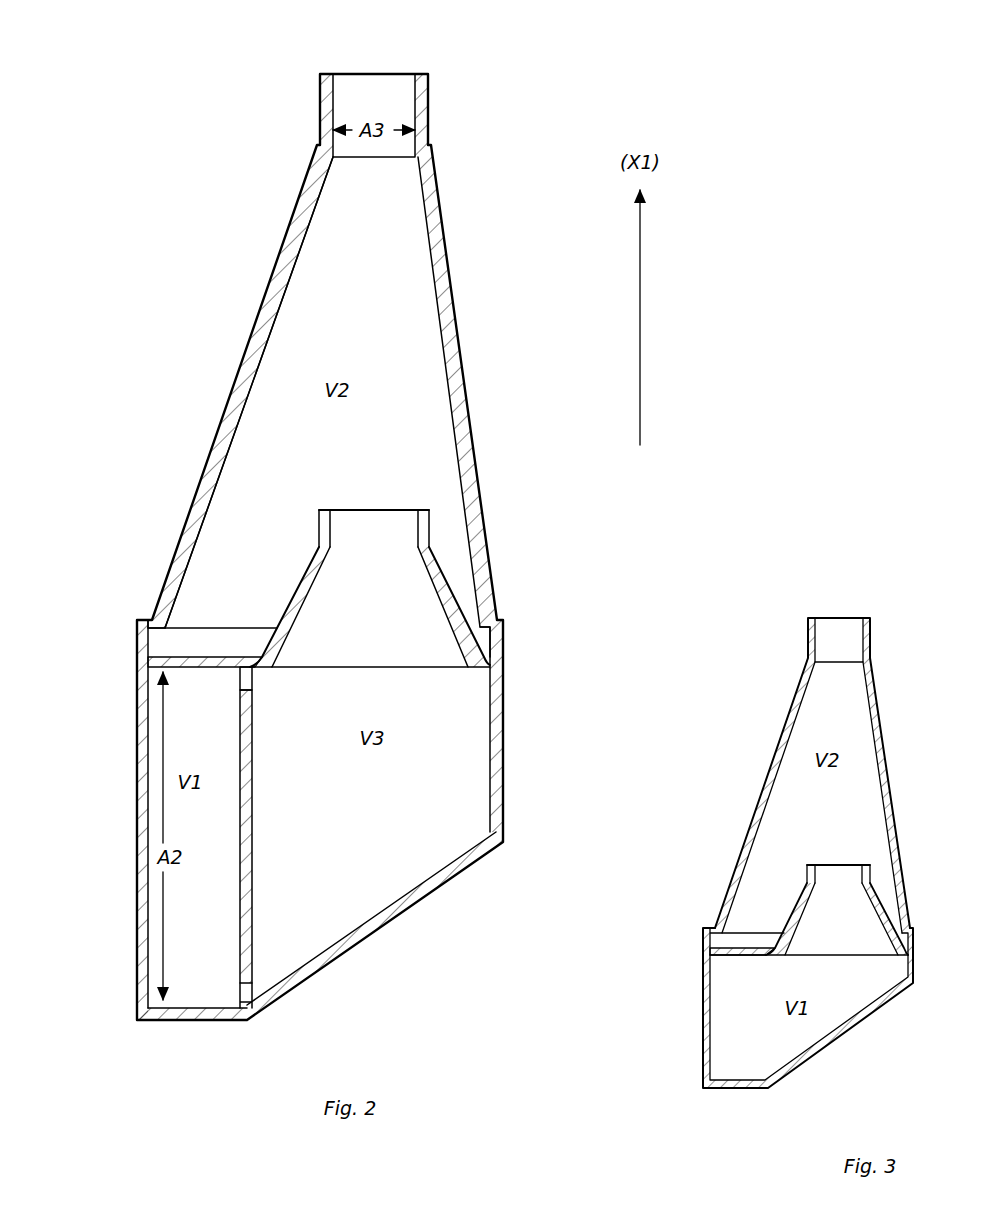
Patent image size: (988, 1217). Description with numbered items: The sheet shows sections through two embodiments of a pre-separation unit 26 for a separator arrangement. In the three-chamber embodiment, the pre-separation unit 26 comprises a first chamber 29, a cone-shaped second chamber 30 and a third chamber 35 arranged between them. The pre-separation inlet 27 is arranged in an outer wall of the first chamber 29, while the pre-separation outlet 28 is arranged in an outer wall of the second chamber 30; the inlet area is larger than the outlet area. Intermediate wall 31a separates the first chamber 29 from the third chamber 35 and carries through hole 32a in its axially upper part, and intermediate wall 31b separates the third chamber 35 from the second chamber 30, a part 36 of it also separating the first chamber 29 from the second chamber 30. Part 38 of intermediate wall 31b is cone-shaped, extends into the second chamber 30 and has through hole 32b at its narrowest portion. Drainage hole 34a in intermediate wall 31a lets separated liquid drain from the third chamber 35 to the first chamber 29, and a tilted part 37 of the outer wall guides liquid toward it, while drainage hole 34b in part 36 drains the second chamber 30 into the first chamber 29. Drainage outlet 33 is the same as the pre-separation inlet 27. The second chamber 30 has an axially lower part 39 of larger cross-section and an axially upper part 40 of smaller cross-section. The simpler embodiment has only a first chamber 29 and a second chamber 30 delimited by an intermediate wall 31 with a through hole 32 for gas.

In FIG. 2, the pre-separation unit 26 is at (160, 122).
In FIG. 3, the pre-separation unit 26 is at (668, 1043).
In FIG. 2, the pre-separation inlet 27 is at (120, 848).
In FIG. 2, the pre-separation outlet 28 is at (395, 70).
In FIG. 2, the first chamber 29 is at (195, 895).
In FIG. 3, the first chamber 29 is at (743, 985).
In FIG. 2, the second chamber 30 is at (418, 318).
In FIG. 3, the second chamber 30 is at (810, 722).
In FIG. 3, the intermediate wall 31 is at (800, 900).
In FIG. 2, the intermediate wall 31a is at (240, 937).
In FIG. 2, the intermediate wall 31b is at (450, 585).
In FIG. 3, the through hole 32 is at (835, 862).
In FIG. 2, the through hole 32a is at (244, 710).
In FIG. 2, the through hole 32b is at (388, 520).
In FIG. 2, the drainage outlet 33 is at (150, 968).
In FIG. 2, the drainage hole 34a is at (250, 988).
In FIG. 2, the drainage hole 34b is at (210, 670).
In FIG. 2, the third chamber 35 is at (400, 848).
In FIG. 2, the part of intermediate wall 36 is at (148, 657).
In FIG. 2, the part of outer wall 37 is at (385, 918).
In FIG. 2, the cone-shaped part 38 is at (440, 558).
In FIG. 2, the axially lower part 39 is at (253, 530).
In FIG. 2, the axially upper part 40 is at (325, 213).